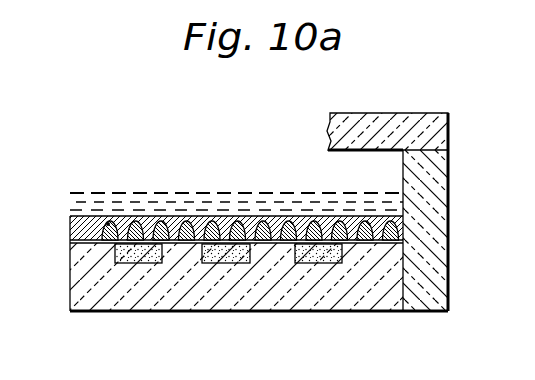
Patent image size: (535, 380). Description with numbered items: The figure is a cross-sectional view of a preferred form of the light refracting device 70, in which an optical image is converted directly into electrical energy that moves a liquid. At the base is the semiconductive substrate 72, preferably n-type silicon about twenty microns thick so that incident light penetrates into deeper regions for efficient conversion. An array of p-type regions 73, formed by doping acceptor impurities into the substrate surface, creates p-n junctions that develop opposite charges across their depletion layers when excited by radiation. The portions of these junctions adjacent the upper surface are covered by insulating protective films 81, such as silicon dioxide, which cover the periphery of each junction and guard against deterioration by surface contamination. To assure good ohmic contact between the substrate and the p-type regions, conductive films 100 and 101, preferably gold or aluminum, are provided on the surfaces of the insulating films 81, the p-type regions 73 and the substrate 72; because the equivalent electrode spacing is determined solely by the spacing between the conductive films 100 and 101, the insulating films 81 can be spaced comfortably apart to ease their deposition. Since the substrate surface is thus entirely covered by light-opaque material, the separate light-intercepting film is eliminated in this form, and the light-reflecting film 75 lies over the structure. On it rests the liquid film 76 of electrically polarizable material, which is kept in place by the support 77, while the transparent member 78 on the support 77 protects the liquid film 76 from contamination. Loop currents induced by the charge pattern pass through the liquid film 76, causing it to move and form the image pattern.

The light refracting device 70 is at (223, 130).
The semiconductive substrate 72 is at (378, 312).
The p-type regions 73 is at (305, 264).
The light-reflecting film 75 is at (73, 228).
The liquid film 76 is at (243, 194).
The support 77 is at (448, 163).
The transparent member 78 is at (425, 118).
The insulating protective film 81 is at (108, 223).
The conductive film 100 is at (177, 232).
The conductive film 101 is at (223, 236).